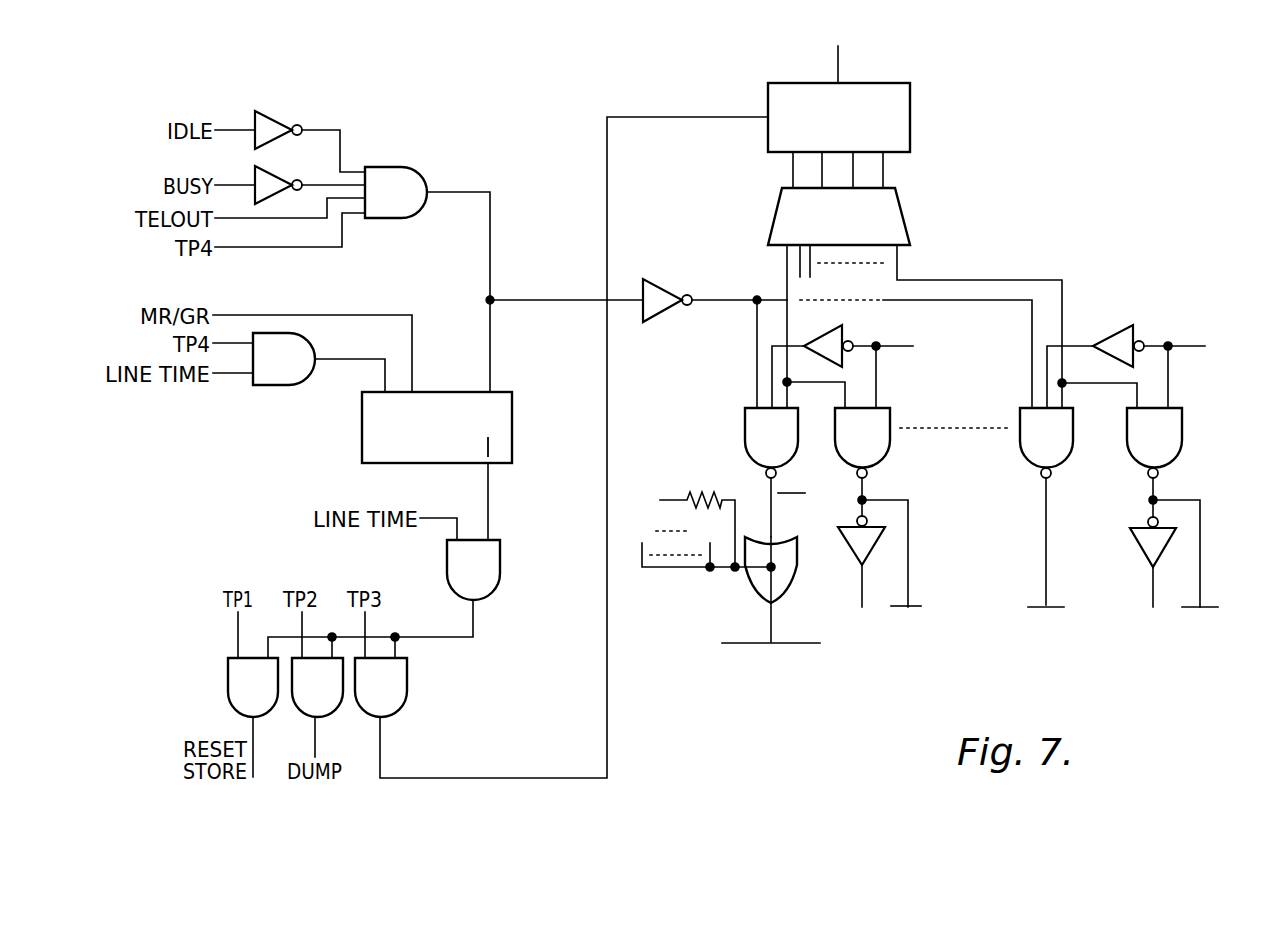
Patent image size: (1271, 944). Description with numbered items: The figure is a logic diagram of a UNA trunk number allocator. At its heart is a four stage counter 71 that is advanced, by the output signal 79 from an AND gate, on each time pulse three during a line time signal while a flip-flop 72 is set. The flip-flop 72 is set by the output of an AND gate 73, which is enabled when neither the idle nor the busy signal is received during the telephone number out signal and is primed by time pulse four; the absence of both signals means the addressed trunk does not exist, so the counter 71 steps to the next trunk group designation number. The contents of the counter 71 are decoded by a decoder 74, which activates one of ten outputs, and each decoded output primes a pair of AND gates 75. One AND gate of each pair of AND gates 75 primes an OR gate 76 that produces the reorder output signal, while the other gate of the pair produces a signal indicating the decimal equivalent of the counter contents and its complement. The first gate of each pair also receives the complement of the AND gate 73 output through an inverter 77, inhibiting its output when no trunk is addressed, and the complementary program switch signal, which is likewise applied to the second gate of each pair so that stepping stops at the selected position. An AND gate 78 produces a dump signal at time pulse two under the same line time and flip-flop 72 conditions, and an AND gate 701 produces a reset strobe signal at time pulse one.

The four stage counter 71 is at (910, 117).
The flip-flop 72 is at (362, 428).
The AND gate 73 is at (386, 167).
The decoder 74 is at (910, 213).
The pairs of AND gates 75 is at (964, 461).
The OR gate 76 is at (748, 585).
The inverter 77 is at (660, 292).
The AND gate 78 is at (330, 718).
The output signal 79 is at (407, 684).
The AND gate 701 is at (228, 683).